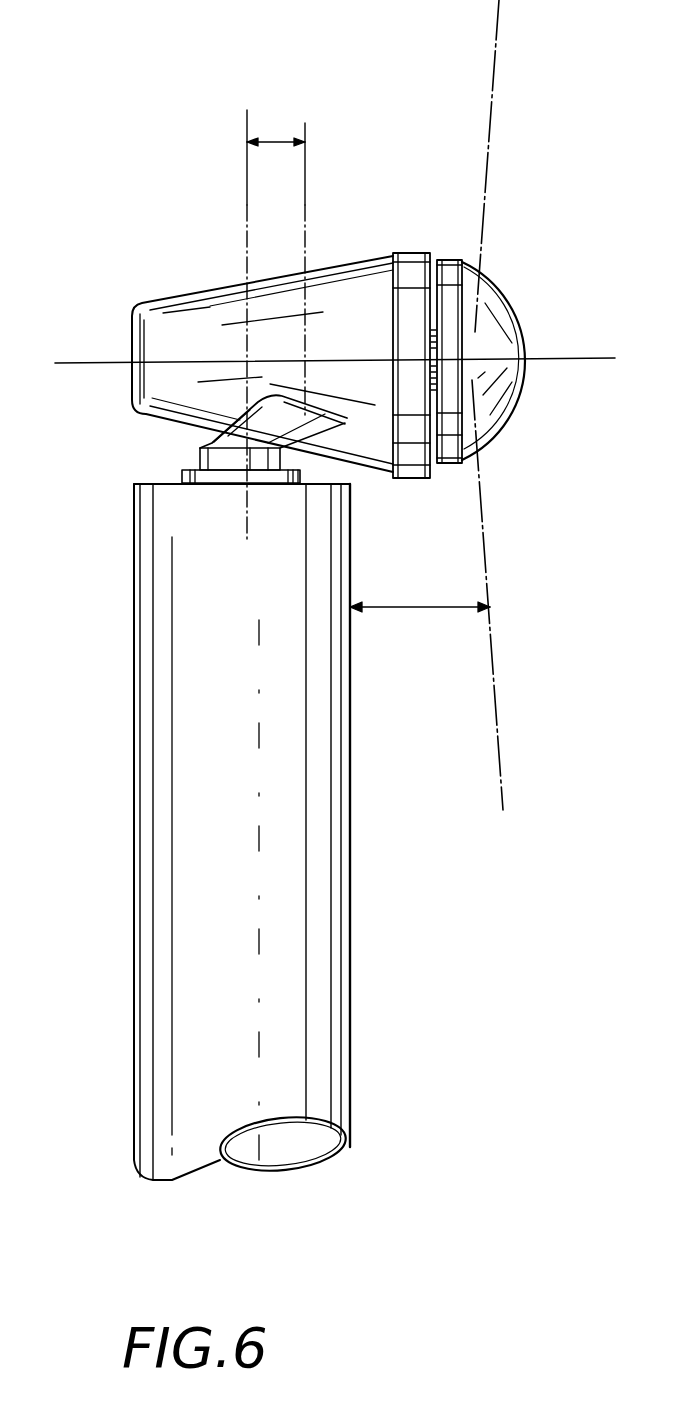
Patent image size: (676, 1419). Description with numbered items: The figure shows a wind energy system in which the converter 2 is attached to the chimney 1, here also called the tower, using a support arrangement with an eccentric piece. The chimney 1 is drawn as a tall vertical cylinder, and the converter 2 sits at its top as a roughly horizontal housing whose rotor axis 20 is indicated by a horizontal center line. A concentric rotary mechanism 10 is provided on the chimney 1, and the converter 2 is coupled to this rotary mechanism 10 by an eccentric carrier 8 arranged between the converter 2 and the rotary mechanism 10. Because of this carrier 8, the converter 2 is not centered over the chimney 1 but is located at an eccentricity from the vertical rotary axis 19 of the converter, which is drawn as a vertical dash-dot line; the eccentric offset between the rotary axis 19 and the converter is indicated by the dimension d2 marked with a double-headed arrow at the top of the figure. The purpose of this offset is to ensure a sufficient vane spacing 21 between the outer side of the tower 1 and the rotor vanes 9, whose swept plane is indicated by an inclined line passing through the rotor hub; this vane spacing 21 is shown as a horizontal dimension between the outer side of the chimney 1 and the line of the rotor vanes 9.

The chimney 1 is at (228, 519).
The converter 2 is at (192, 338).
The carrier 8 is at (290, 412).
The rotor vanes 9 is at (497, 72).
The rotary mechanism 10 is at (218, 477).
The rotary axis of converter 19 is at (247, 178).
The rotor axis 20 is at (562, 357).
The vane spacing 21 is at (430, 605).
The axis offset distance d2 is at (276, 122).